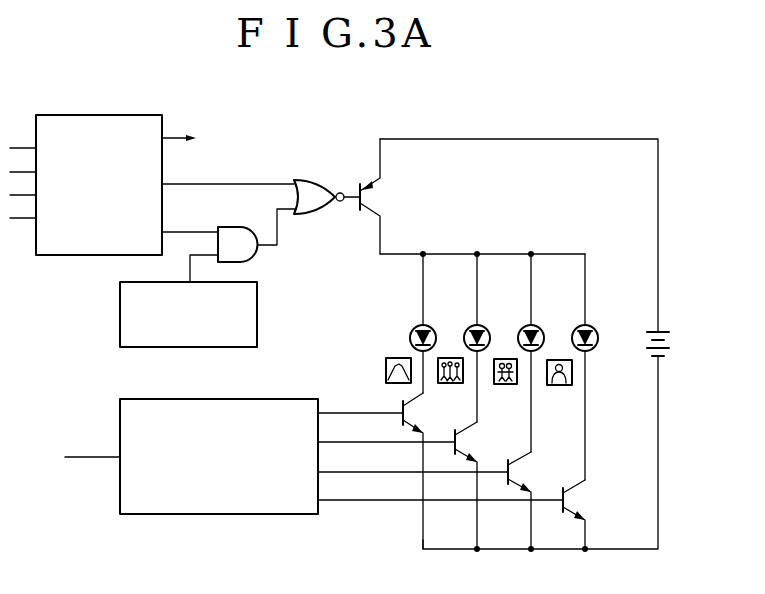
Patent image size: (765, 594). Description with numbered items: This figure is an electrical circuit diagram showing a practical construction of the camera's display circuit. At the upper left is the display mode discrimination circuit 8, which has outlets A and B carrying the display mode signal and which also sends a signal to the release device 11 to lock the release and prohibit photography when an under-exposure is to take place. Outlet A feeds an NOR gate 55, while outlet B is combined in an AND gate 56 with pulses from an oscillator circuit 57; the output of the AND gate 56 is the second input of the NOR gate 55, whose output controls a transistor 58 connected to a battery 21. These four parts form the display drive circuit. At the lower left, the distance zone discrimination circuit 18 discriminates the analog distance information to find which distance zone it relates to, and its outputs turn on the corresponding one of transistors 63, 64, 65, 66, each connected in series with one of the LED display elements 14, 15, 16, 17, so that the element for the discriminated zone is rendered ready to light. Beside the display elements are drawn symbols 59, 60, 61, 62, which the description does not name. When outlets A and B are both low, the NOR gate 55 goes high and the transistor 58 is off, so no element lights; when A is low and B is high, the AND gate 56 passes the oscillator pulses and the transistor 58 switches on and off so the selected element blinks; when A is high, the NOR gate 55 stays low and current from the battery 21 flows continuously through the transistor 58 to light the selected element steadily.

The display mode discrimination circuit 8 is at (122, 115).
The release device 11 is at (189, 138).
The display element 14 is at (434, 327).
The display element 15 is at (488, 326).
The display element 16 is at (542, 328).
The display element 17 is at (596, 328).
The distance zone discrimination circuit 18 is at (285, 399).
The battery 21 is at (647, 340).
The NOR gate 55 is at (308, 181).
The AND gate 56 is at (254, 256).
The oscillator circuit 57 is at (120, 318).
The transistor 58 is at (370, 190).
The landscape mark 59 is at (386, 366).
The group mark 60 is at (463, 383).
The two-person mark 61 is at (505, 359).
The portrait mark 62 is at (557, 386).
The transistor 63 is at (400, 402).
The transistor 64 is at (466, 440).
The transistor 65 is at (518, 471).
The transistor 66 is at (576, 499).